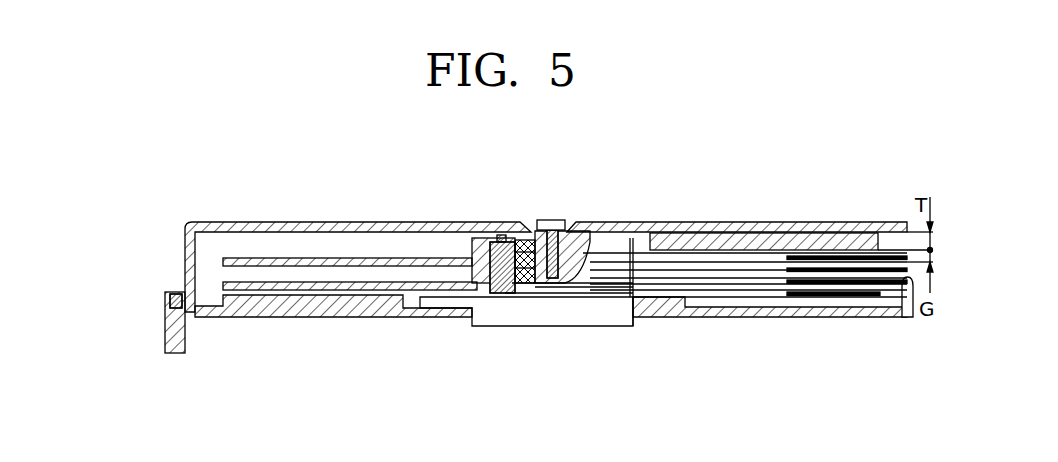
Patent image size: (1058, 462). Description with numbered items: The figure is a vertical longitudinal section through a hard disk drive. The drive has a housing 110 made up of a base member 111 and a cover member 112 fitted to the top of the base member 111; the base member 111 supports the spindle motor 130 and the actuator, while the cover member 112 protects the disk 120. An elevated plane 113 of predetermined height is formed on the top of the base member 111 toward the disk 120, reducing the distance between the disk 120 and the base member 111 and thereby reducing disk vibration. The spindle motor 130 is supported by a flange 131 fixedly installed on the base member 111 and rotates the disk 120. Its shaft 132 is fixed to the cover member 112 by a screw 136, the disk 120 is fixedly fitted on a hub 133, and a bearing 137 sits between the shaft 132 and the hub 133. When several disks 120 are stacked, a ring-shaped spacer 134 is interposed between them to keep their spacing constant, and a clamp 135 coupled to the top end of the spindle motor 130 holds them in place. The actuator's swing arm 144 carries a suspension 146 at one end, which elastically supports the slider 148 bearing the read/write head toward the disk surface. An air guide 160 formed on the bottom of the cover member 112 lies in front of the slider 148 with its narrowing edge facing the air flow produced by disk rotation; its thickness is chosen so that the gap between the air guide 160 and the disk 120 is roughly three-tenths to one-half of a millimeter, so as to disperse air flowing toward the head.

The housing 110 is at (121, 243).
The base member 111 is at (167, 343).
The cover member 112 is at (185, 240).
The elevated plane 113 is at (349, 296).
The disk 120 is at (272, 267).
The spindle motor 130 is at (643, 285).
The flange 131 is at (442, 318).
The shaft 132 is at (572, 231).
The hub 133 is at (505, 298).
The clamp block 134 is at (472, 248).
The clamp 135 is at (482, 237).
The screw 136 is at (553, 220).
The bearing 137 is at (526, 231).
The swing arm 144 is at (898, 256).
The suspension 146 is at (857, 262).
The slider 148 is at (800, 250).
The air guide 160 is at (715, 233).